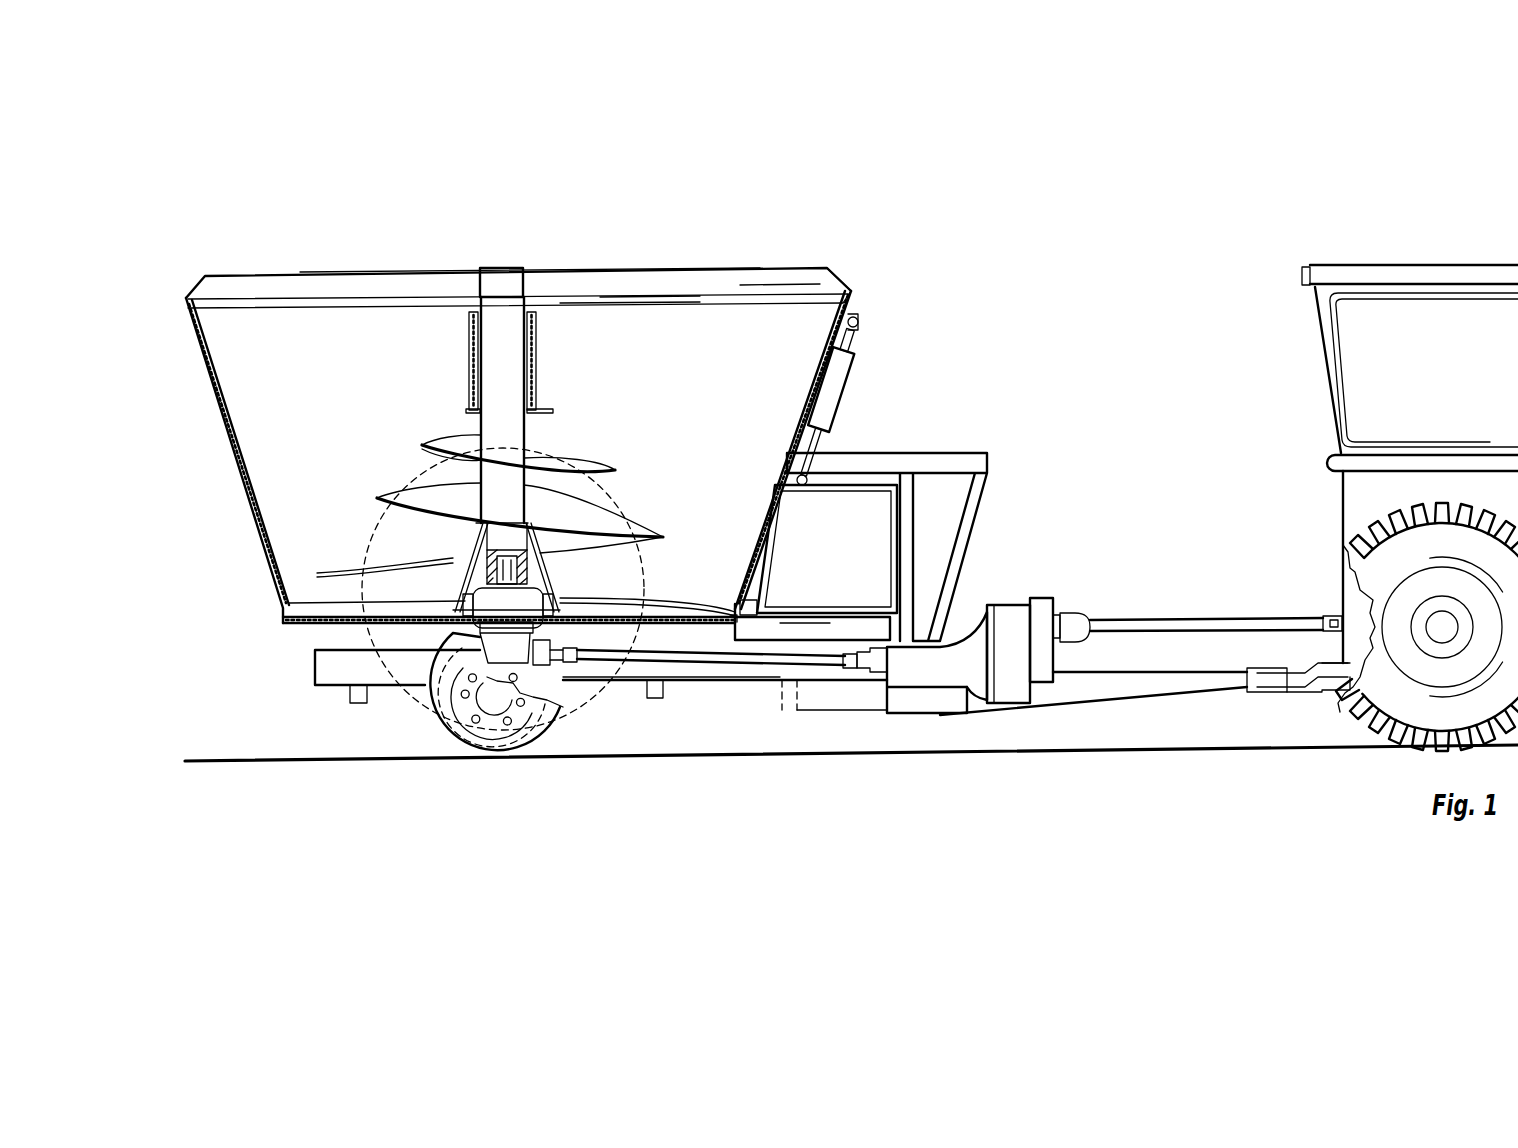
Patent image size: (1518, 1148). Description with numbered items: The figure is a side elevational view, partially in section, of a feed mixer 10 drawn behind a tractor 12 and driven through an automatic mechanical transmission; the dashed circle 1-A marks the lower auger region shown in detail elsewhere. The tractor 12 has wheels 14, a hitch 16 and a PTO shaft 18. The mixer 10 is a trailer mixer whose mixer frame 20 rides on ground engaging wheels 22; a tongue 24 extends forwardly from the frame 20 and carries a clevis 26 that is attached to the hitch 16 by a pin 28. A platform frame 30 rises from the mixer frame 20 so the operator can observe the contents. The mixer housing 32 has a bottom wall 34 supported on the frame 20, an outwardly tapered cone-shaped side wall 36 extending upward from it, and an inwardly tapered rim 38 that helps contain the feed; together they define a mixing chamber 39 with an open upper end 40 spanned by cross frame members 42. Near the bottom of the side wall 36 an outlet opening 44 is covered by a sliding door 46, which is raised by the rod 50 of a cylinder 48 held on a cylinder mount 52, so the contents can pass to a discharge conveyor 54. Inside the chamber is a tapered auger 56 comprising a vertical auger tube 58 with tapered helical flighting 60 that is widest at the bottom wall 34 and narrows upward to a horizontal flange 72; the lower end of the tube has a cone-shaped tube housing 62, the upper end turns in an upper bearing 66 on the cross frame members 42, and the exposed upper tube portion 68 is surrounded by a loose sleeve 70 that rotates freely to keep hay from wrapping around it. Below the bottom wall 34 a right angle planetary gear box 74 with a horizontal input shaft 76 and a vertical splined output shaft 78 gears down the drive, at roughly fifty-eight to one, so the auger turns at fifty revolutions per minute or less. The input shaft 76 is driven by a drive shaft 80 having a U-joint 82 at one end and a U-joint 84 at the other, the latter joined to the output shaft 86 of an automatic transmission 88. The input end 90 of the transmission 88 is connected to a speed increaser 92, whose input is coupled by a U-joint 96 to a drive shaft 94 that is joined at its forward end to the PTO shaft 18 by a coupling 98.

The feed mixer 10 is at (292, 268).
The tractor 12 is at (1320, 262).
The wheels 14 is at (1350, 713).
The hitch 16 is at (1310, 697).
The PTO shaft 18 is at (1340, 612).
The mixer frame 20 is at (673, 670).
The ground engaging wheels 22 is at (497, 745).
The tongue 24 is at (1167, 687).
The clevis 26 is at (1247, 672).
The pin 28 is at (1272, 674).
The platform frame 30 is at (973, 527).
The mixer housing 32 is at (722, 268).
The bottom wall 34 is at (747, 610).
The side wall 36 is at (853, 295).
The rim 38 is at (833, 272).
The mixing chamber 39 is at (613, 313).
The open upper end 40 is at (790, 283).
The cross frame members 42 is at (643, 300).
The outlet opening 44 is at (780, 500).
The sliding door 46 is at (787, 545).
The cylinder 48 is at (840, 388).
The rod 50 is at (822, 440).
The cylinder mount 52 is at (860, 320).
The discharge conveyor 54 is at (802, 623).
The tapered auger 56 is at (473, 427).
The auger tube 58 is at (433, 483).
The helical flighting 60 is at (390, 493).
The tube housing 62 is at (460, 548).
The upper bearing 66 is at (497, 300).
The exposed upper tube portion 68 is at (490, 377).
The sleeve 70 is at (470, 338).
The horizontal flange 72 is at (526, 423).
The right angle planetary gear box 74 is at (512, 656).
The input shaft 76 is at (547, 648).
The splined output shaft 78 is at (530, 585).
The drive shaft 80 is at (717, 664).
The U-joint 82 is at (573, 677).
The U-joint 84 is at (848, 670).
The output shaft 86 is at (870, 658).
The automatic transmission 88 is at (943, 673).
The input end 90 is at (1035, 683).
The speed increaser 92 is at (1037, 597).
The drive shaft 94 is at (1180, 620).
The U-joint 96 is at (1073, 612).
The coupling 98 is at (1333, 618).
The detail circle 1-A is at (385, 530).